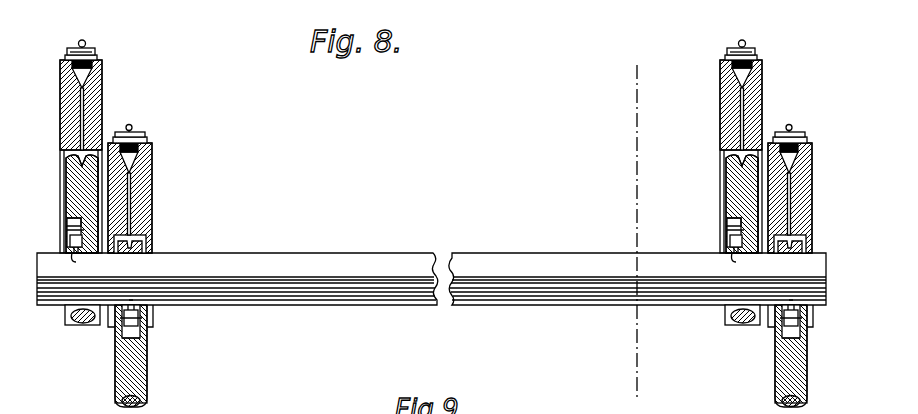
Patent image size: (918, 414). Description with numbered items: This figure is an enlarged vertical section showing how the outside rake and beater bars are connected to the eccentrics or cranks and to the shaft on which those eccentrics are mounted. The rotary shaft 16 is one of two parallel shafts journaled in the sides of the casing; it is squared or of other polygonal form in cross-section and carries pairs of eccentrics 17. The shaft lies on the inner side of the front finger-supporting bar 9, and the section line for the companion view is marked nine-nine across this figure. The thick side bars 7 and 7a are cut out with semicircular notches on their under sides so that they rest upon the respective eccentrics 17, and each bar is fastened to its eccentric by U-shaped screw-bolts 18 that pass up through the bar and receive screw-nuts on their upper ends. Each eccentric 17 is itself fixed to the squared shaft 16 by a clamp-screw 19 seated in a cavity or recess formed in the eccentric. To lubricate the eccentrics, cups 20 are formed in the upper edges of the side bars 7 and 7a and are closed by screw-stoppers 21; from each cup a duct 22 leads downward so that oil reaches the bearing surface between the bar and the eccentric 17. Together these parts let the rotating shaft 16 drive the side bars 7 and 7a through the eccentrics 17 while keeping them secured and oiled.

The thick side bar 7 is at (152, 184).
The thick side bar 7a is at (101, 83).
The front finger-supporting bar 9 is at (637, 227).
The rotary shaft 16 is at (214, 263).
The eccentric 17 is at (78, 183).
The U-shaped screw-bolt 18 is at (80, 327).
The clamp-screw 19 is at (66, 239).
The cup 20 is at (63, 75).
The screw-stopper 21 is at (93, 57).
The duct 22 is at (84, 110).